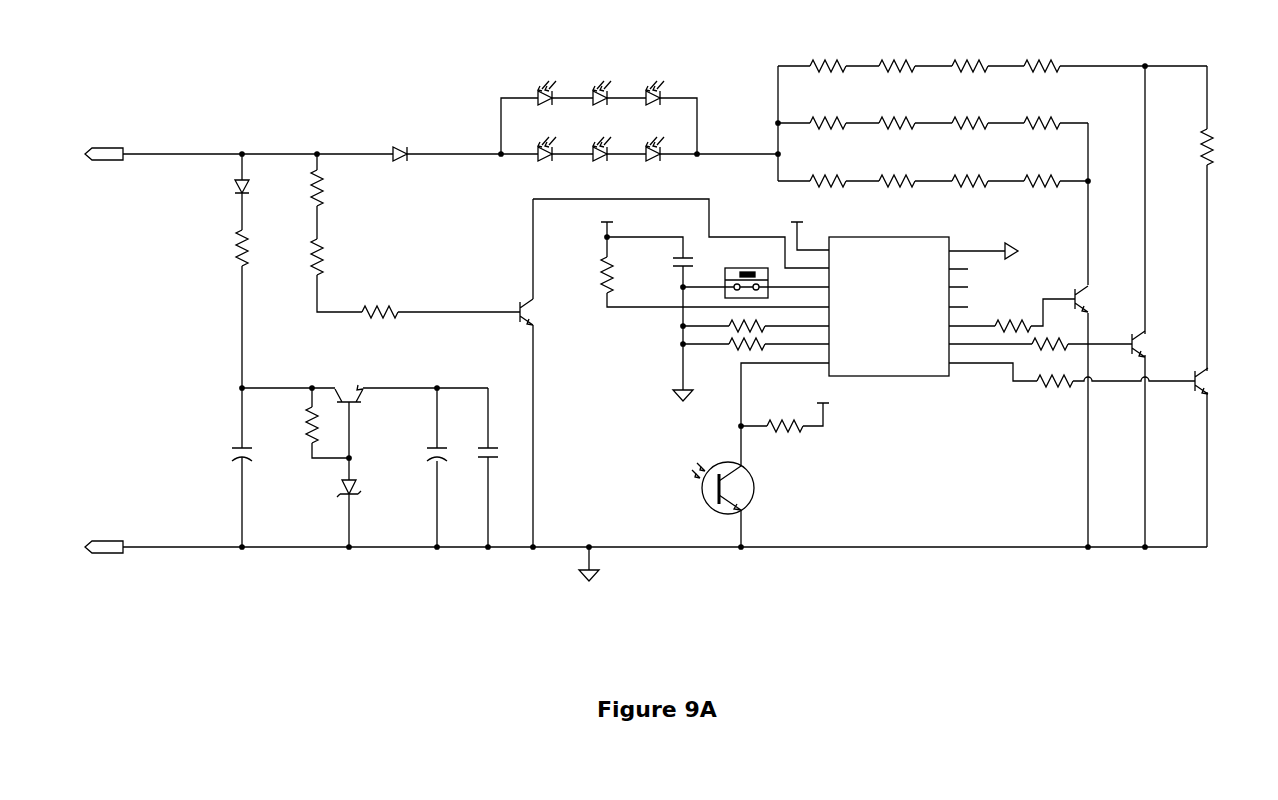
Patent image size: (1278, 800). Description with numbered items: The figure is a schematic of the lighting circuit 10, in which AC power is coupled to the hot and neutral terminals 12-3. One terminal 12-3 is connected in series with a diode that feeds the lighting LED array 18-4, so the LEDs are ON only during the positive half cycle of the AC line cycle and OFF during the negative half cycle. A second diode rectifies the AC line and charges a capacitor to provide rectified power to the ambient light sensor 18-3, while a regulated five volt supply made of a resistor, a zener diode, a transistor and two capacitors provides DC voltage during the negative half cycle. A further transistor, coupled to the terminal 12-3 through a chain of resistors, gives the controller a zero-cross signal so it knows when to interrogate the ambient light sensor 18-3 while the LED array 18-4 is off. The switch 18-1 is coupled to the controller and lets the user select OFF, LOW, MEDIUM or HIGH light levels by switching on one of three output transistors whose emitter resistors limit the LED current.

The lighting circuit 10 is at (224, 68).
The hot and neutral terminals 12-3 is at (104, 361).
The LED array 18-4 is at (568, 52).
The switch S1 18-1 is at (735, 262).
The phototransistor Q6 18-3 is at (690, 488).